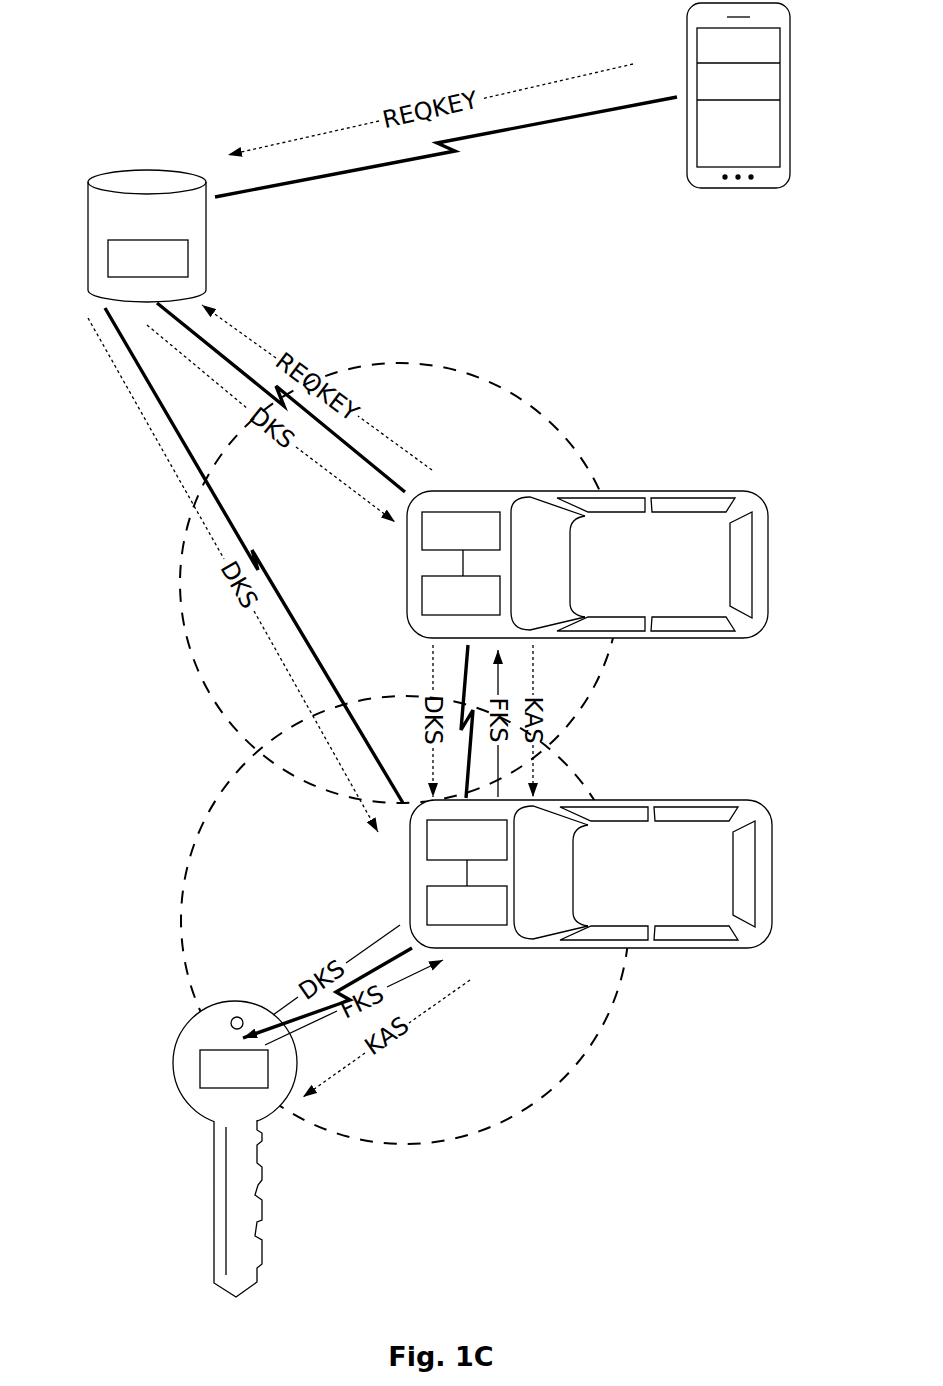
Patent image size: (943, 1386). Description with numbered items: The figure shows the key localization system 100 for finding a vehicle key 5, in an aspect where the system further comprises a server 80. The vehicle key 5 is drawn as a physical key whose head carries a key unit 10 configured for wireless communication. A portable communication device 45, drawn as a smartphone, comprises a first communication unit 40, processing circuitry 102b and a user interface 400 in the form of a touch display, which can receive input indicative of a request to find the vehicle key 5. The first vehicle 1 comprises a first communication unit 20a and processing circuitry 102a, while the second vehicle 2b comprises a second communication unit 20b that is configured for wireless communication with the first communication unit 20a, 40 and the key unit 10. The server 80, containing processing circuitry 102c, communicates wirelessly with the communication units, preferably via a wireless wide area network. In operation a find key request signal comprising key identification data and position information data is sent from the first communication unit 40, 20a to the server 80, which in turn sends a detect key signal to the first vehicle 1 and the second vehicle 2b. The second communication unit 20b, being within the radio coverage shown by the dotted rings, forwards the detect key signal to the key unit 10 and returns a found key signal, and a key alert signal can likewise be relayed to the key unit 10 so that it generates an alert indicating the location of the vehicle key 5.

The key localization system 100 is at (150, 92).
The portable communication device 45 is at (677, 55).
The first communication unit 40 is at (738, 48).
The processing circuitry 102b is at (598, 497).
The user interface 400 is at (738, 124).
The server 80 is at (147, 236).
The processing circuitry 102c is at (148, 258).
The first vehicle 1 is at (587, 564).
The first communication unit 20a is at (461, 531).
The processing circuitry 102a is at (461, 595).
The second vehicle 2b is at (591, 874).
The second communication unit 20b is at (467, 840).
The vehicle key 5 is at (275, 1188).
The key unit 10 is at (234, 1069).